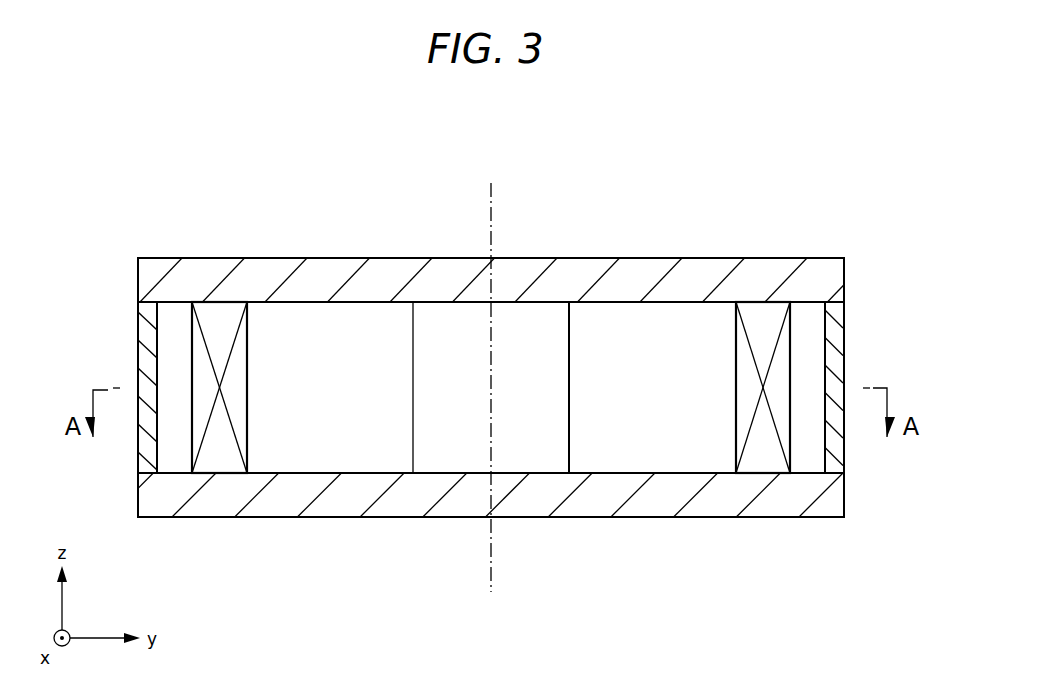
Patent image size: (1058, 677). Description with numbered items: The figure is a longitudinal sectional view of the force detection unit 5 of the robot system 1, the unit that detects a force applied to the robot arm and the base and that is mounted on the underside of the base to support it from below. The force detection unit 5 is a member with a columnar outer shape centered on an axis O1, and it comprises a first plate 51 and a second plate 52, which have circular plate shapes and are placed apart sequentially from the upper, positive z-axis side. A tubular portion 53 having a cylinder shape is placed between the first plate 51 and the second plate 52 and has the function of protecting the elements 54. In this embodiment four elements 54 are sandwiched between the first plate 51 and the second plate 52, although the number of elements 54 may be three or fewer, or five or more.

The rotary electric machine 1 is at (862, 180).
The force detection unit 5 is at (657, 228).
The first plate 51 is at (832, 277).
The second plate 52 is at (832, 488).
The tubular portion 53 is at (833, 372).
The elements 54 is at (218, 333).
The central axis O1 is at (492, 568).